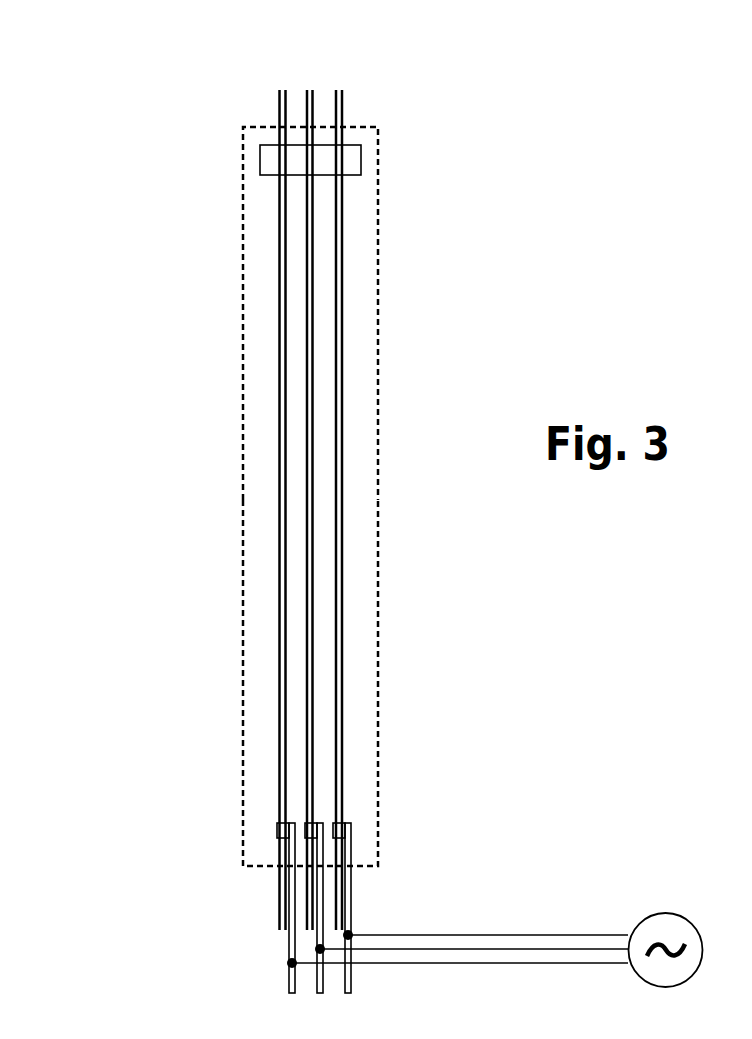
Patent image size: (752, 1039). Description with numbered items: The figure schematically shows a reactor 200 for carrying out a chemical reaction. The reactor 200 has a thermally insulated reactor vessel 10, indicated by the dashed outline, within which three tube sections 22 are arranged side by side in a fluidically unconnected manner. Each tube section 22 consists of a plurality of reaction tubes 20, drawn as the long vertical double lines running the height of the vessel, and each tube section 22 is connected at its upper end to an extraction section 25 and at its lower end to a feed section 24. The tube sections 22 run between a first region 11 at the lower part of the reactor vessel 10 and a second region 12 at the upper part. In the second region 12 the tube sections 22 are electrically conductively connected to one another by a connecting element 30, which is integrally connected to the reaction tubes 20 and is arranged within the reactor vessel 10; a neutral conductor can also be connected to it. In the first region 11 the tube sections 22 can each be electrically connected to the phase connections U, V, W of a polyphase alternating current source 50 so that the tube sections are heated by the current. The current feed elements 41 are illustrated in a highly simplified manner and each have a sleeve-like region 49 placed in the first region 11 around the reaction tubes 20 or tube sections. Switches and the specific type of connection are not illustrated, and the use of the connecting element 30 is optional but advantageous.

The reactor 200 is at (186, 46).
The reactor vessel 10 is at (243, 605).
The second region 12 is at (404, 192).
The first region 11 is at (410, 763).
The reaction tube 20 is at (262, 406).
The tube section 22 is at (306, 320).
The extraction section 25 is at (343, 97).
The feed section 24 is at (280, 902).
The connecting element 30 is at (361, 160).
The sleeve-like region 49 is at (277, 824).
The current feed element 41 is at (289, 954).
The polyphase alternating current source 50 is at (652, 913).
The phase connection U is at (503, 963).
The phase connection V is at (547, 949).
The phase connection W is at (587, 935).